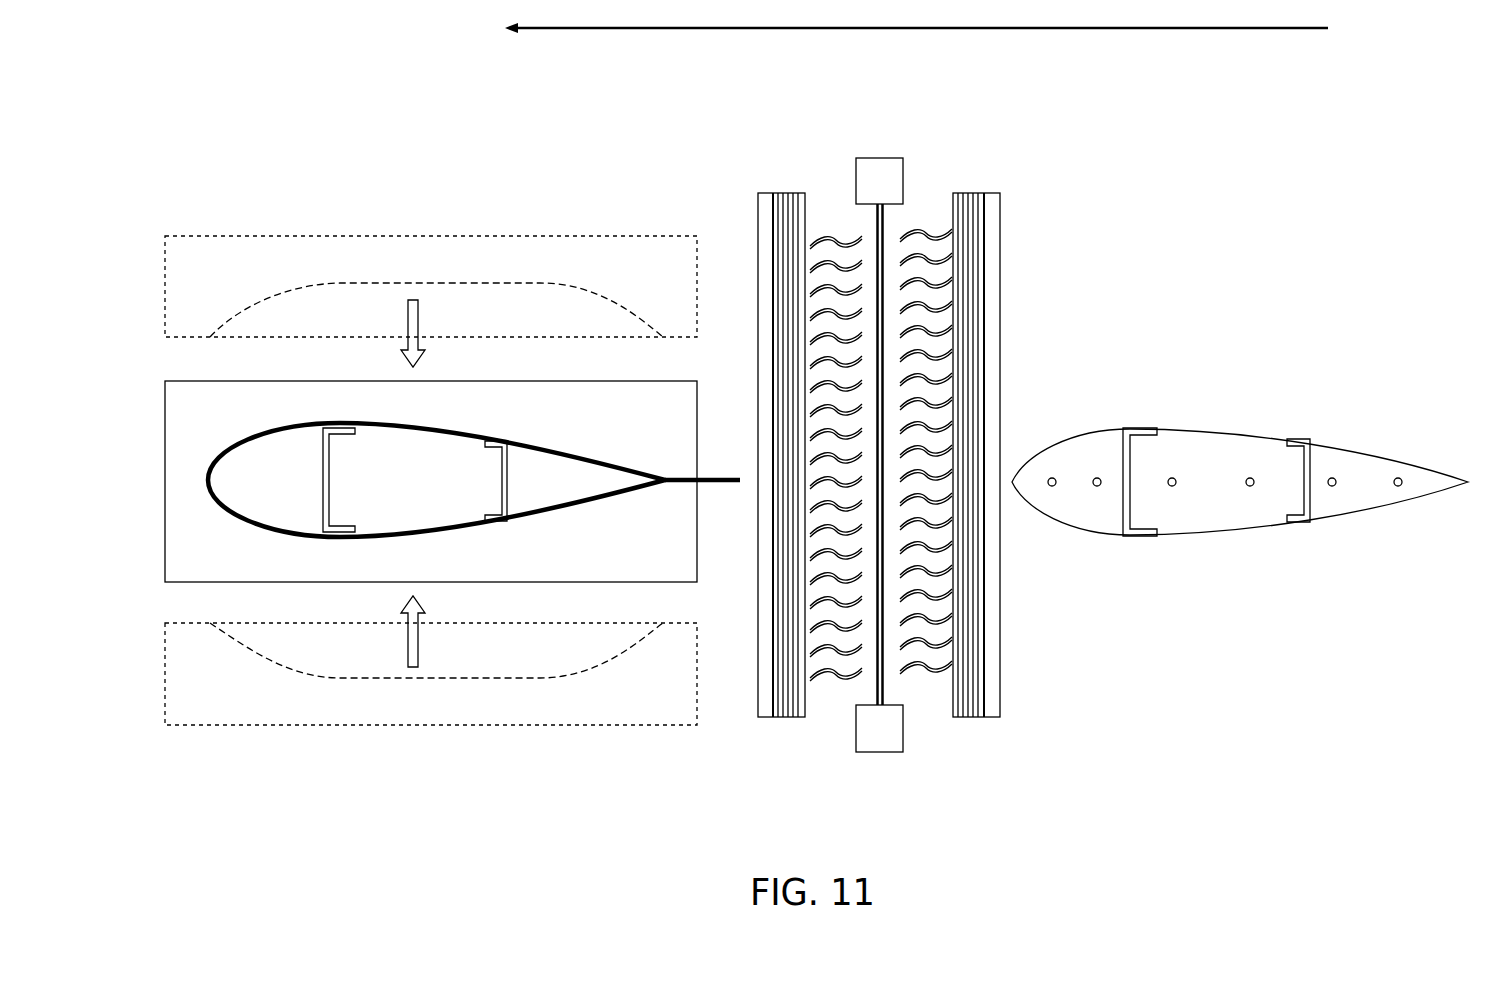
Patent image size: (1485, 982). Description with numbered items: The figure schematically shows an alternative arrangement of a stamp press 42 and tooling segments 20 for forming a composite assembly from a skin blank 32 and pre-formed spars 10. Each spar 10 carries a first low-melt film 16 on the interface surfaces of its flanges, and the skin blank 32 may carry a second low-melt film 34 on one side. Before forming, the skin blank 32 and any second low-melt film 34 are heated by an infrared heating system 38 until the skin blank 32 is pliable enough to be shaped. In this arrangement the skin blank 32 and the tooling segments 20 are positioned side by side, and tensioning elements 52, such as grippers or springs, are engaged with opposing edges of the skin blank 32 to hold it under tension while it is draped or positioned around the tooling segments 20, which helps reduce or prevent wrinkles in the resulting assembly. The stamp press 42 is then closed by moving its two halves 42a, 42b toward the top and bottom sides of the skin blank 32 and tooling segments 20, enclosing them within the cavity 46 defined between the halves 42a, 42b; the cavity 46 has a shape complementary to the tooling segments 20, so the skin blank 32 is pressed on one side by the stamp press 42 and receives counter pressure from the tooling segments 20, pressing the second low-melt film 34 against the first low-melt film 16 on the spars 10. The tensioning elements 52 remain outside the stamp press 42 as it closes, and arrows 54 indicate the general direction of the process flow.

The spar 10 is at (327, 486).
The first low-melt film 16 is at (1138, 429).
The tooling segments 20 is at (364, 521).
The skin blank 32 is at (257, 440).
The second low-melt film 34 is at (884, 224).
The infrared heating system 38 is at (1042, 220).
The stamp press 42 is at (146, 482).
The stamp press half 42a is at (170, 287).
The stamp press half 42b is at (170, 680).
The cavity 46 is at (286, 514).
The tensioning element 52 is at (877, 166).
The arrows 54 is at (1200, 30).